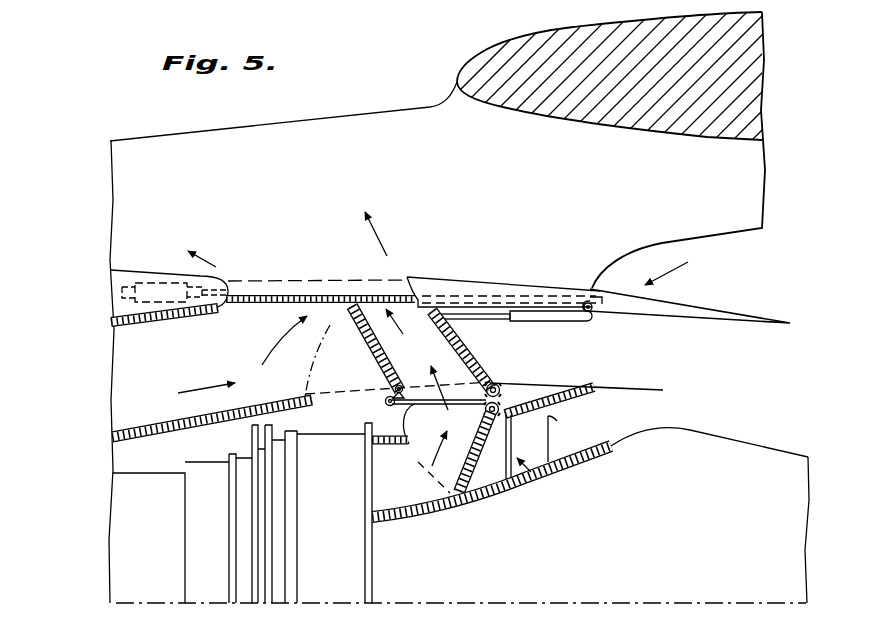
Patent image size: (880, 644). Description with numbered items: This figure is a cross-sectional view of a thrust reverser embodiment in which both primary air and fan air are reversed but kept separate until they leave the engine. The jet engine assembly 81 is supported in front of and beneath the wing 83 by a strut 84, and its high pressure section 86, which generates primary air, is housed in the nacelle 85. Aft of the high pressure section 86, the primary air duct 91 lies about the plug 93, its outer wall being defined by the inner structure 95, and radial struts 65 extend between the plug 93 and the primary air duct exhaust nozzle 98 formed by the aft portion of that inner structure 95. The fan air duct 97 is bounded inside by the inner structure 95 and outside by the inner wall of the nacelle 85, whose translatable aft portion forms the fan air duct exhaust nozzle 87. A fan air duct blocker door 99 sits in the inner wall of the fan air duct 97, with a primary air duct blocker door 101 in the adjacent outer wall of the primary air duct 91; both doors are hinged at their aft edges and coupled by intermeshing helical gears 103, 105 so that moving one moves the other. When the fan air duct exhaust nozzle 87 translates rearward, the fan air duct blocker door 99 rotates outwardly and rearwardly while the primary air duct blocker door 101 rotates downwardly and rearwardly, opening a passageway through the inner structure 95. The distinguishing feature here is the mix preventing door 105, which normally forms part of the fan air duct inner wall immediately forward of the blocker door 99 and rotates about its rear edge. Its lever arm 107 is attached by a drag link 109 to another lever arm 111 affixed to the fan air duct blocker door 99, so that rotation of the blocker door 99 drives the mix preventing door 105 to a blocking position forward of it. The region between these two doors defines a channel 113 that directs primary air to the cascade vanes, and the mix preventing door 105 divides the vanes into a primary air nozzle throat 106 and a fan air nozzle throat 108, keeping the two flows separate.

The radial struts 65 is at (541, 474).
The jet engine assembly 81 is at (685, 269).
The wing 83 is at (519, 62).
The strut 84 is at (388, 117).
The nacelle 85 is at (157, 270).
The high pressure section 86 is at (111, 524).
The fan air duct exhaust nozzle 87 is at (682, 312).
The primary air duct 91 is at (425, 500).
The plug 93 is at (715, 455).
The inner structure 95 is at (312, 426).
The fan air duct 97 is at (222, 352).
The primary air duct exhaust nozzle 98 is at (625, 383).
The fan air duct blocker door 99 is at (478, 355).
The primary air duct blocker door 101 is at (493, 498).
The intermeshing helical gear 103 is at (505, 393).
The mix preventing door 105 is at (370, 340).
The primary air nozzle throat 106 is at (372, 300).
The lever arm 107 is at (530, 318).
The fan air nozzle throat 108 is at (258, 294).
The drag link 109 is at (426, 432).
The lever arm 111 is at (483, 397).
The channel 113 is at (428, 357).